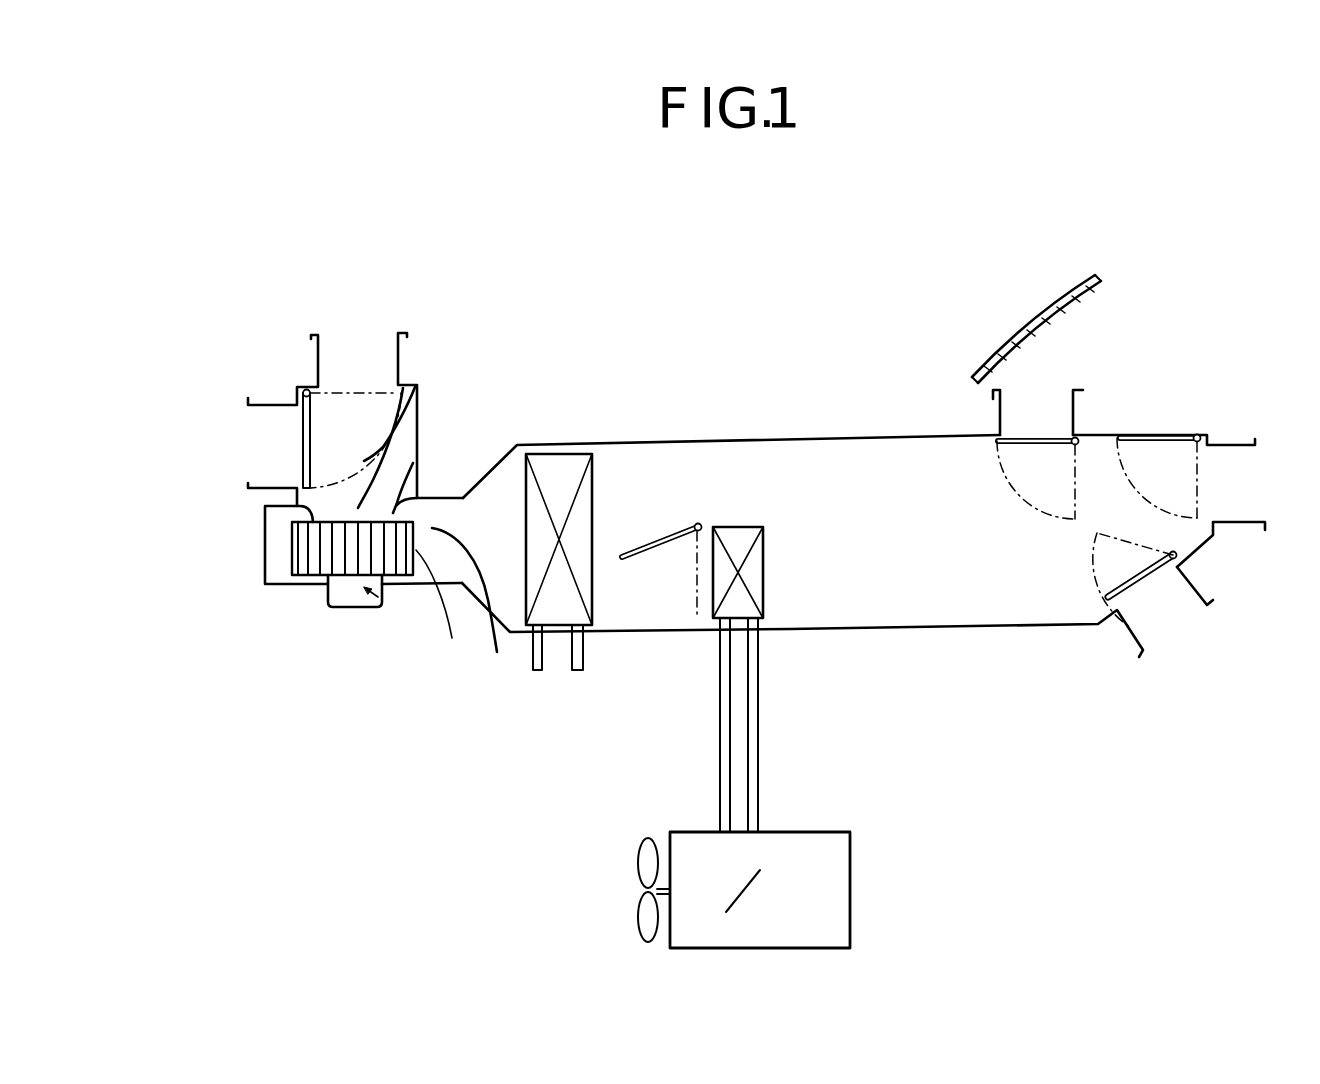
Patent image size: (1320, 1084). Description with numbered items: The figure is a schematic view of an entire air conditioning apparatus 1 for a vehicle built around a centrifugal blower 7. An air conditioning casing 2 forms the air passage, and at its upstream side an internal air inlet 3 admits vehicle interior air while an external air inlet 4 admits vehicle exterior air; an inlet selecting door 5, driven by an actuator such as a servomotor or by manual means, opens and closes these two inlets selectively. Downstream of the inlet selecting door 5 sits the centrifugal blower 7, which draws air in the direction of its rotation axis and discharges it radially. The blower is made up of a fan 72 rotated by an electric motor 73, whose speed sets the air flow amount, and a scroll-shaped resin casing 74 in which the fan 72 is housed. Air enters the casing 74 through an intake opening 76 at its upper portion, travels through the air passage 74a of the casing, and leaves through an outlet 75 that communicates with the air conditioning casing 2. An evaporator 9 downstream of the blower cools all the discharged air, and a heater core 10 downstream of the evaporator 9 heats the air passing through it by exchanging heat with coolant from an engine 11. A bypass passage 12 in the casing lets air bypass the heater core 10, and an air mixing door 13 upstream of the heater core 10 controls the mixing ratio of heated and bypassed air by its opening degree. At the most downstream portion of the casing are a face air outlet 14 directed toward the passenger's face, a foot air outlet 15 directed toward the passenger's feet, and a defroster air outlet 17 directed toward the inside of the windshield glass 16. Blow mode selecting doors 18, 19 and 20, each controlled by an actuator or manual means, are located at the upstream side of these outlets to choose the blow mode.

The air conditioning apparatus 1 is at (717, 327).
The air conditioning casing 2 is at (667, 441).
The internal air inlet 3 is at (267, 437).
The external air inlet 4 is at (355, 350).
The inlet selecting door 5 is at (302, 463).
The centrifugal blower 7 is at (382, 598).
The evaporator 9 is at (559, 470).
The heater core 10 is at (765, 585).
The engine 11 is at (852, 928).
The bypass passage 12 is at (755, 459).
The air mixing door 13 is at (657, 555).
The face air outlet 14 is at (1243, 510).
The foot air outlet 15 is at (1173, 615).
The windshield glass 16 is at (1018, 332).
The defroster air outlet 17 is at (1037, 397).
The blow mode selecting door 18 is at (1163, 435).
The blow mode selecting door 19 is at (1130, 620).
The blow mode selecting door 20 is at (1045, 441).
The fan 72 is at (447, 617).
The electric motor 73 is at (352, 608).
The casing 74 is at (265, 547).
The air passage 74a is at (497, 652).
The outlet 75 is at (414, 385).
The intake opening 76 is at (417, 450).